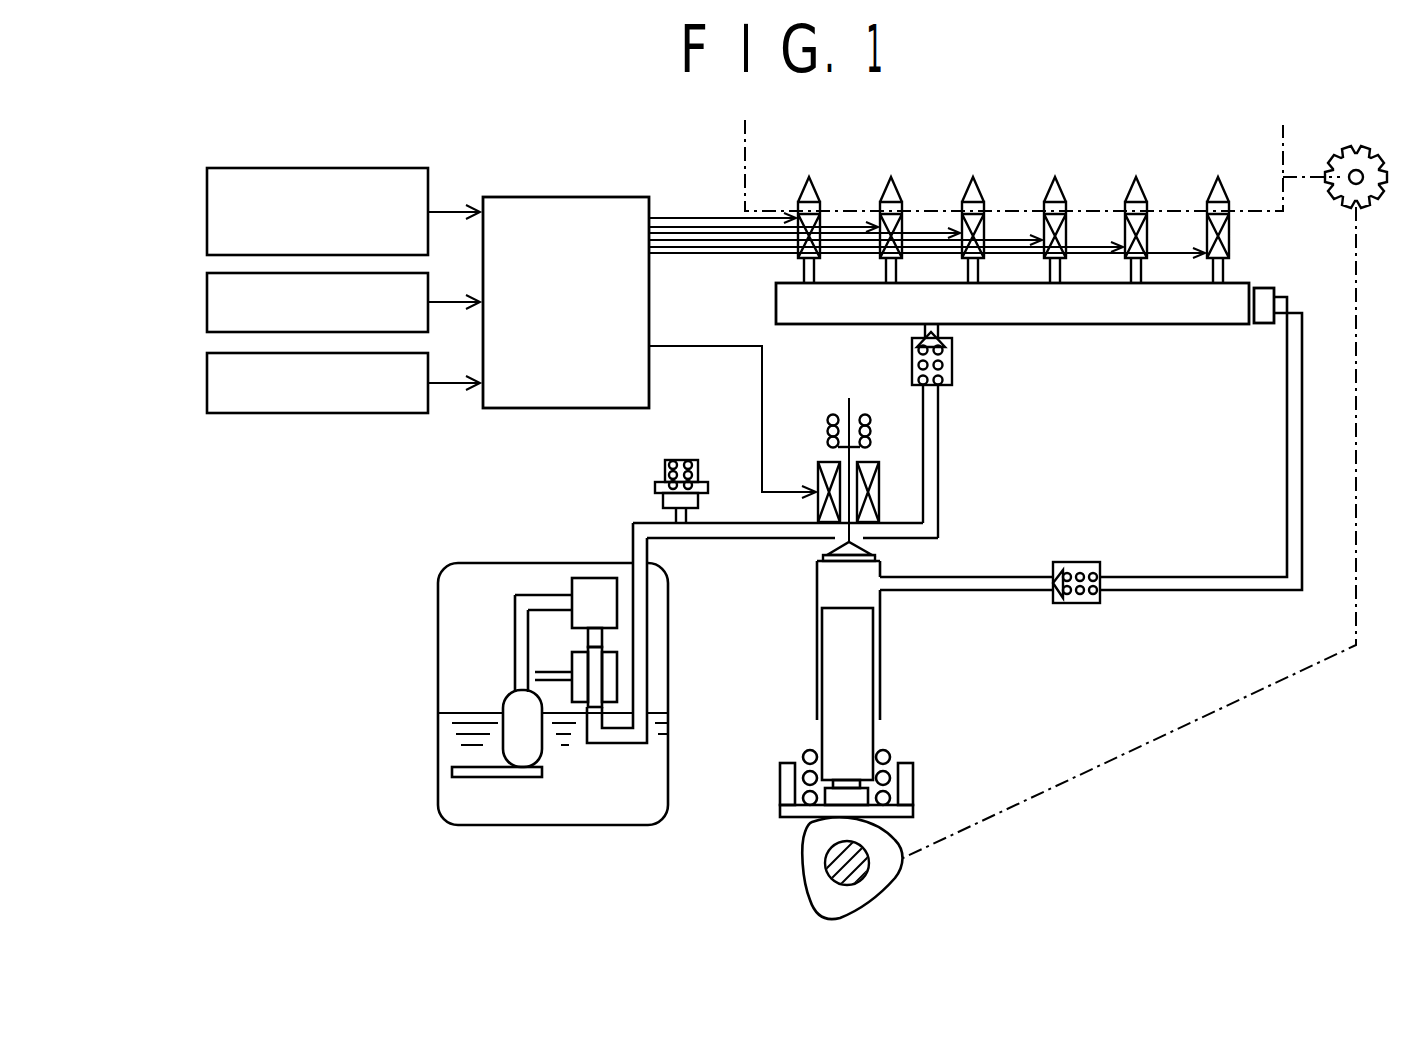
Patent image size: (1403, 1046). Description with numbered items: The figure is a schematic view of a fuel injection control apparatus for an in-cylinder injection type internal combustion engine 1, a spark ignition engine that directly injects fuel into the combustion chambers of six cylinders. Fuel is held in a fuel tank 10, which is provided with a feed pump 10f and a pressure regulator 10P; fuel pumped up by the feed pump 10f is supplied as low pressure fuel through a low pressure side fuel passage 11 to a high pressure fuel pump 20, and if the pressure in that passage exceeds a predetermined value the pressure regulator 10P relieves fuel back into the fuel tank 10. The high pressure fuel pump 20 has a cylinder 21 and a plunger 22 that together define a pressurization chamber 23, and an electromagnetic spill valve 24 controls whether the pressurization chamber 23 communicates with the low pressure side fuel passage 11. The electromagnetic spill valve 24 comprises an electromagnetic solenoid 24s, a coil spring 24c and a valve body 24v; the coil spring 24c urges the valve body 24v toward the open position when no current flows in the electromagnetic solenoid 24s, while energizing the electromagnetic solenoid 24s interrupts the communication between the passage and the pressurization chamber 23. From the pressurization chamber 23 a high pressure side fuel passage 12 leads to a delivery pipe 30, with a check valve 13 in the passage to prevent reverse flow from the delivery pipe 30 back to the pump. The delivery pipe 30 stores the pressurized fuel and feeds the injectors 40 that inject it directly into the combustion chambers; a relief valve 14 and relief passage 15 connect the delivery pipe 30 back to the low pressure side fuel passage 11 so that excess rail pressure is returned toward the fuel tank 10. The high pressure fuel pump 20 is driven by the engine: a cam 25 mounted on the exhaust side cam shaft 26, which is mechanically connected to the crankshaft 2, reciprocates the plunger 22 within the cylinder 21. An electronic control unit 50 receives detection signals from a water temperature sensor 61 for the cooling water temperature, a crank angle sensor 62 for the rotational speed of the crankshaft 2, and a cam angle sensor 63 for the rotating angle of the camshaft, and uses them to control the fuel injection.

The internal combustion engine 1 is at (997, 148).
The crankshaft 2 is at (1337, 165).
The fuel tank 10 is at (591, 674).
The pressure regulator 10P is at (617, 677).
The feed pump 10f is at (534, 748).
The low pressure side fuel passage 11 is at (699, 545).
The high pressure side fuel passage 12 is at (1029, 575).
The check valve 13 is at (1078, 562).
The relief valve 14 is at (952, 360).
The relief passage 15 is at (939, 436).
The high pressure fuel pump 20 is at (868, 689).
The cylinder 21 is at (817, 577).
The plunger 22 is at (817, 727).
The pressurization chamber 23 is at (828, 598).
The electromagnetic spill valve 24 is at (892, 456).
The coil spring 24c is at (862, 413).
The electromagnetic solenoid 24s is at (880, 482).
The valve body 24v is at (870, 549).
The cam 25 is at (808, 882).
The cam shaft 26 is at (870, 862).
The delivery pipe 30 is at (1072, 325).
The injector 40 is at (1254, 252).
The electronic control unit 50 is at (618, 197).
The water temperature sensor 61 is at (207, 210).
The crank angle sensor 62 is at (207, 300).
The cam angle sensor 63 is at (207, 381).